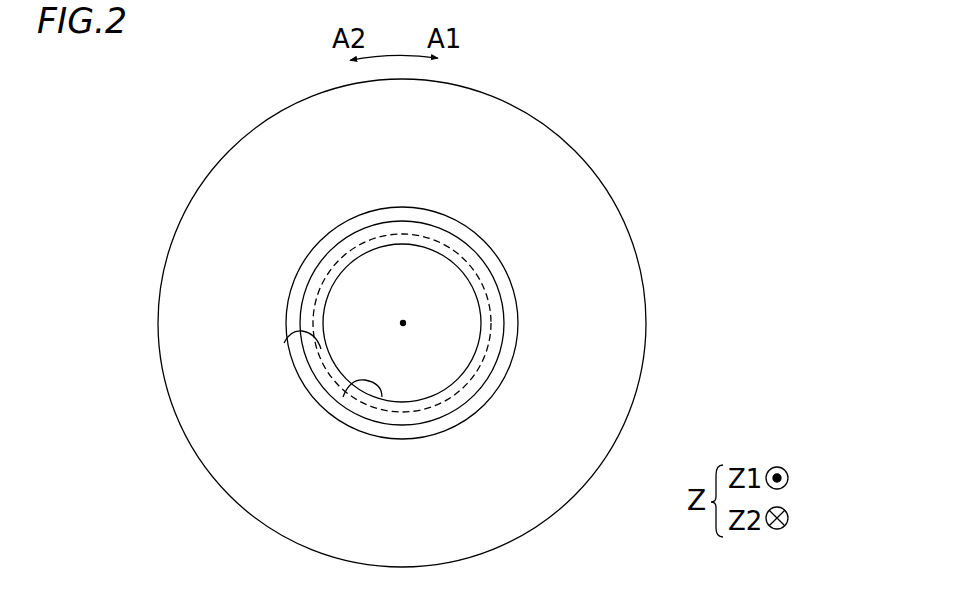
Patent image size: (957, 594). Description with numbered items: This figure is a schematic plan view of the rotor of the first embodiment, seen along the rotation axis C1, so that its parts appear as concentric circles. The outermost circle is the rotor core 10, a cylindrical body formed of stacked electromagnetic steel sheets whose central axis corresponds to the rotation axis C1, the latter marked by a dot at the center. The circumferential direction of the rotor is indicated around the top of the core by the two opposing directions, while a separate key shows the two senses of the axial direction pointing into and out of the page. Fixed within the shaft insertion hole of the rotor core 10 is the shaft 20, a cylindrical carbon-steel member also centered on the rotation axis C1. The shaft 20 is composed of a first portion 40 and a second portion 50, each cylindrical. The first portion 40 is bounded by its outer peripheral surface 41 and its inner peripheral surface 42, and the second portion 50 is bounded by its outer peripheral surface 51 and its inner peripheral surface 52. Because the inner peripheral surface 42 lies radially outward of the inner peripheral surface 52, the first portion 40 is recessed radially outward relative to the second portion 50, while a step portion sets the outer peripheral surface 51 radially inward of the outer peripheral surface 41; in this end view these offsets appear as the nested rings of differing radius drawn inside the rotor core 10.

The rotor core 10 is at (246, 154).
The shaft 20 is at (428, 207).
The first portion 40 is at (472, 237).
The outer peripheral surface of the first portion 41 is at (290, 293).
The inner peripheral surface of the first portion 42 is at (290, 334).
The second portion 50 is at (497, 295).
The outer peripheral surface of the second portion 51 is at (335, 243).
The inner peripheral surface of the second portion 52 is at (343, 389).
The rotation axis C1 is at (401, 322).